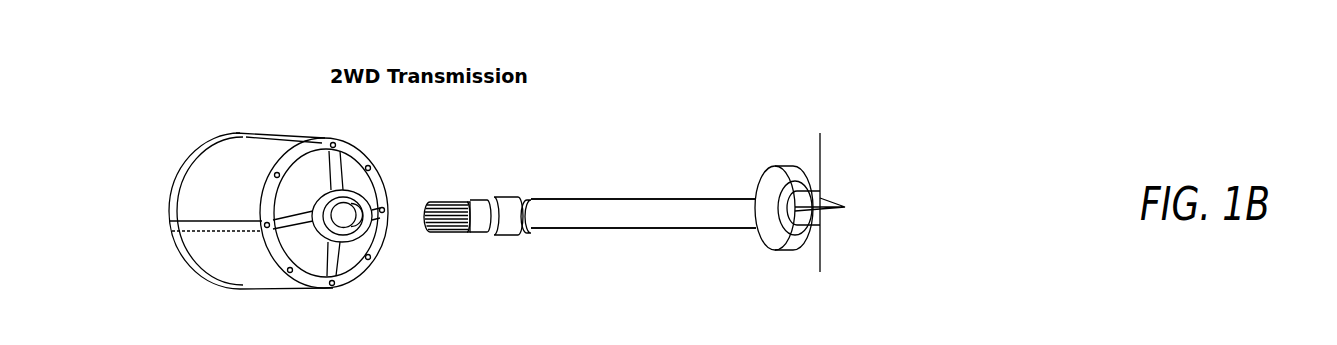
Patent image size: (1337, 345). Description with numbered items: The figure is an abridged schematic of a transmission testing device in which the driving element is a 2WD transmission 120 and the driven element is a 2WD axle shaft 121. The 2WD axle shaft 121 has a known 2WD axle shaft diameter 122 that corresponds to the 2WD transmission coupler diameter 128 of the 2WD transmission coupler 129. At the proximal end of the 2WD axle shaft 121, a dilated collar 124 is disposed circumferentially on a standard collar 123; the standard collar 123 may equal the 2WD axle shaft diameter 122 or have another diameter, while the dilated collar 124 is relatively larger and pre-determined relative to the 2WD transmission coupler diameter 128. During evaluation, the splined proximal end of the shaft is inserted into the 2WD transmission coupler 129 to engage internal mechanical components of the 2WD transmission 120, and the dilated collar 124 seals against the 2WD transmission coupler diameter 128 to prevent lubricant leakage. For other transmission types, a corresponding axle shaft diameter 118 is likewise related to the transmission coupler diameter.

The corresponding axle shaft diameter 118 is at (730, 228).
The 2WD transmission 120 is at (243, 132).
The 2WD axle shaft 121 is at (678, 198).
The 2WD axle shaft diameter 122 is at (647, 228).
The standard collar 123 is at (484, 200).
The dilated collar 124 is at (527, 197).
The 2WD transmission coupler diameter 128 is at (352, 236).
The 2WD transmission coupler 129 is at (366, 217).